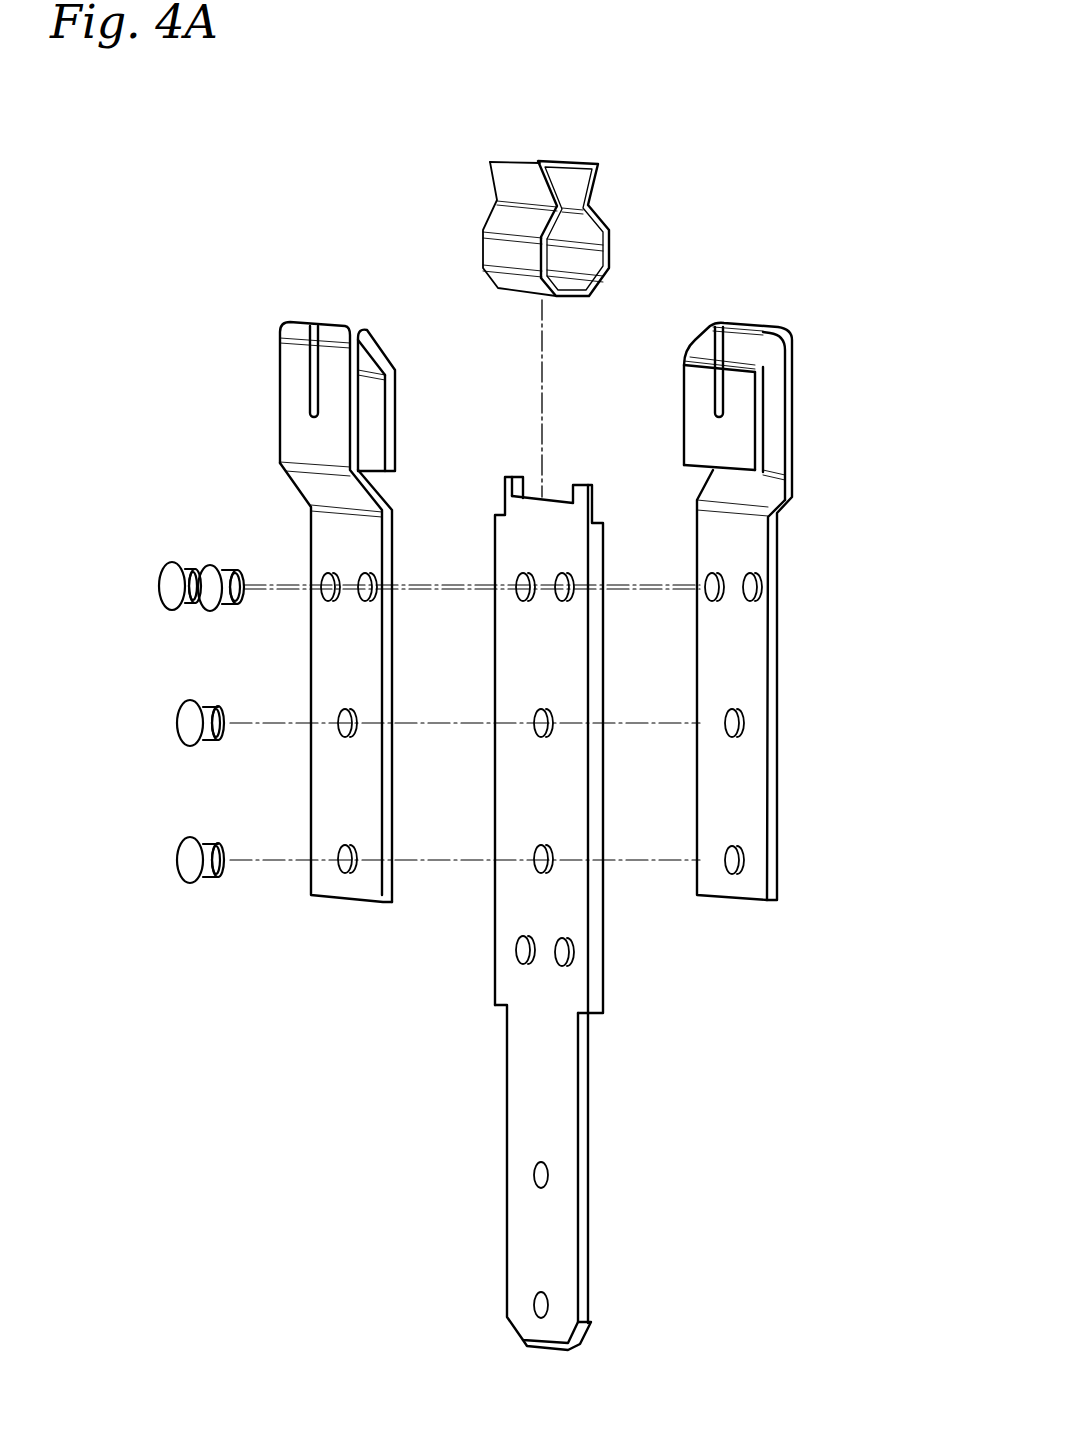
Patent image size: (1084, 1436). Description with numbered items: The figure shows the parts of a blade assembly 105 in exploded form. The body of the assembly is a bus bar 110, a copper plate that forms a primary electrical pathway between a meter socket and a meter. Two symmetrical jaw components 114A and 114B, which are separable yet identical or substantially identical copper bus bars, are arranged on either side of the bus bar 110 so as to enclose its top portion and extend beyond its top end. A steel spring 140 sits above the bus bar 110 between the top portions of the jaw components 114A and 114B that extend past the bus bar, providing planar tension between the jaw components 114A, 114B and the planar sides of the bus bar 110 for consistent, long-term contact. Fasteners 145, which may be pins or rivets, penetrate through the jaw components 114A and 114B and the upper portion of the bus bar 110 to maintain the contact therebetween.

The blade assembly 105 is at (822, 158).
The bus bar 110 is at (507, 1300).
The jaw component 114A is at (293, 368).
The jaw component 114B is at (806, 370).
The steel spring 140 is at (567, 161).
The fasteners 145 is at (162, 563).